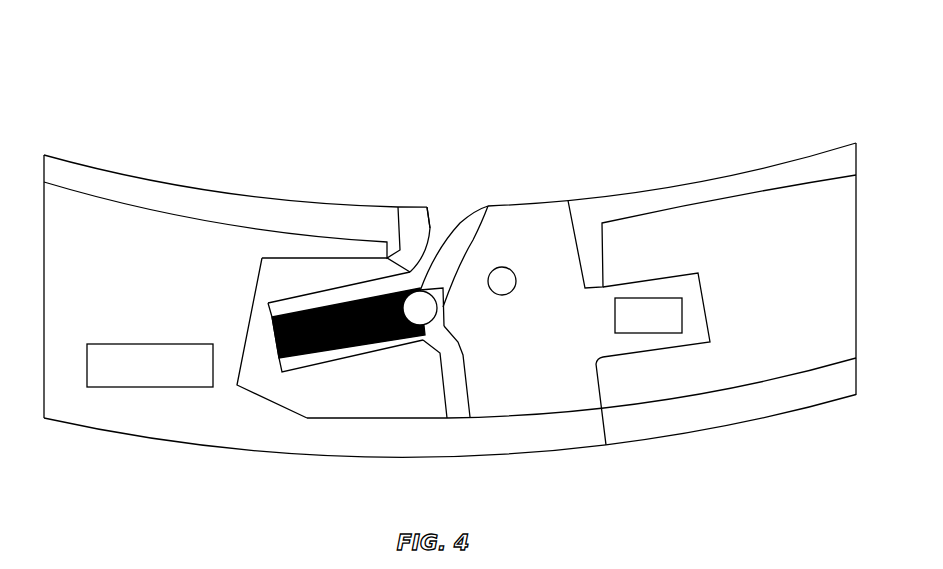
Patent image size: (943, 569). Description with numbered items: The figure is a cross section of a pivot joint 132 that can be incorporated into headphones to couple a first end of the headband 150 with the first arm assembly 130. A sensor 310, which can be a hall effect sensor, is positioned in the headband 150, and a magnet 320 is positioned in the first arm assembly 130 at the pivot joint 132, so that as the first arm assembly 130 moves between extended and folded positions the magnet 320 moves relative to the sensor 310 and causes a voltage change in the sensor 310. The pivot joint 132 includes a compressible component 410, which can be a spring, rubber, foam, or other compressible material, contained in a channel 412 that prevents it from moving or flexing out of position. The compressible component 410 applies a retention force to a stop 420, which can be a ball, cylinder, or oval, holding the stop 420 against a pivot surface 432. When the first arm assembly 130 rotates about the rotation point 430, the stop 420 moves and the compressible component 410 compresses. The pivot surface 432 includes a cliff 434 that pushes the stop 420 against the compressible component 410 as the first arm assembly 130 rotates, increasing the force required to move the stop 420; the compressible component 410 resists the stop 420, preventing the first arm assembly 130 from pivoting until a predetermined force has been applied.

The pivot joint 132 is at (413, 160).
The headband 150 is at (175, 191).
The first arm assembly 130 is at (592, 202).
The sensor 310 is at (248, 322).
The magnet 320 is at (653, 359).
The compressible component 410 is at (277, 357).
The channel 412 is at (338, 368).
The stop 420 is at (475, 400).
The rotation point 430 is at (510, 292).
The pivot surface 432 is at (470, 250).
The cliff 434 is at (432, 237).